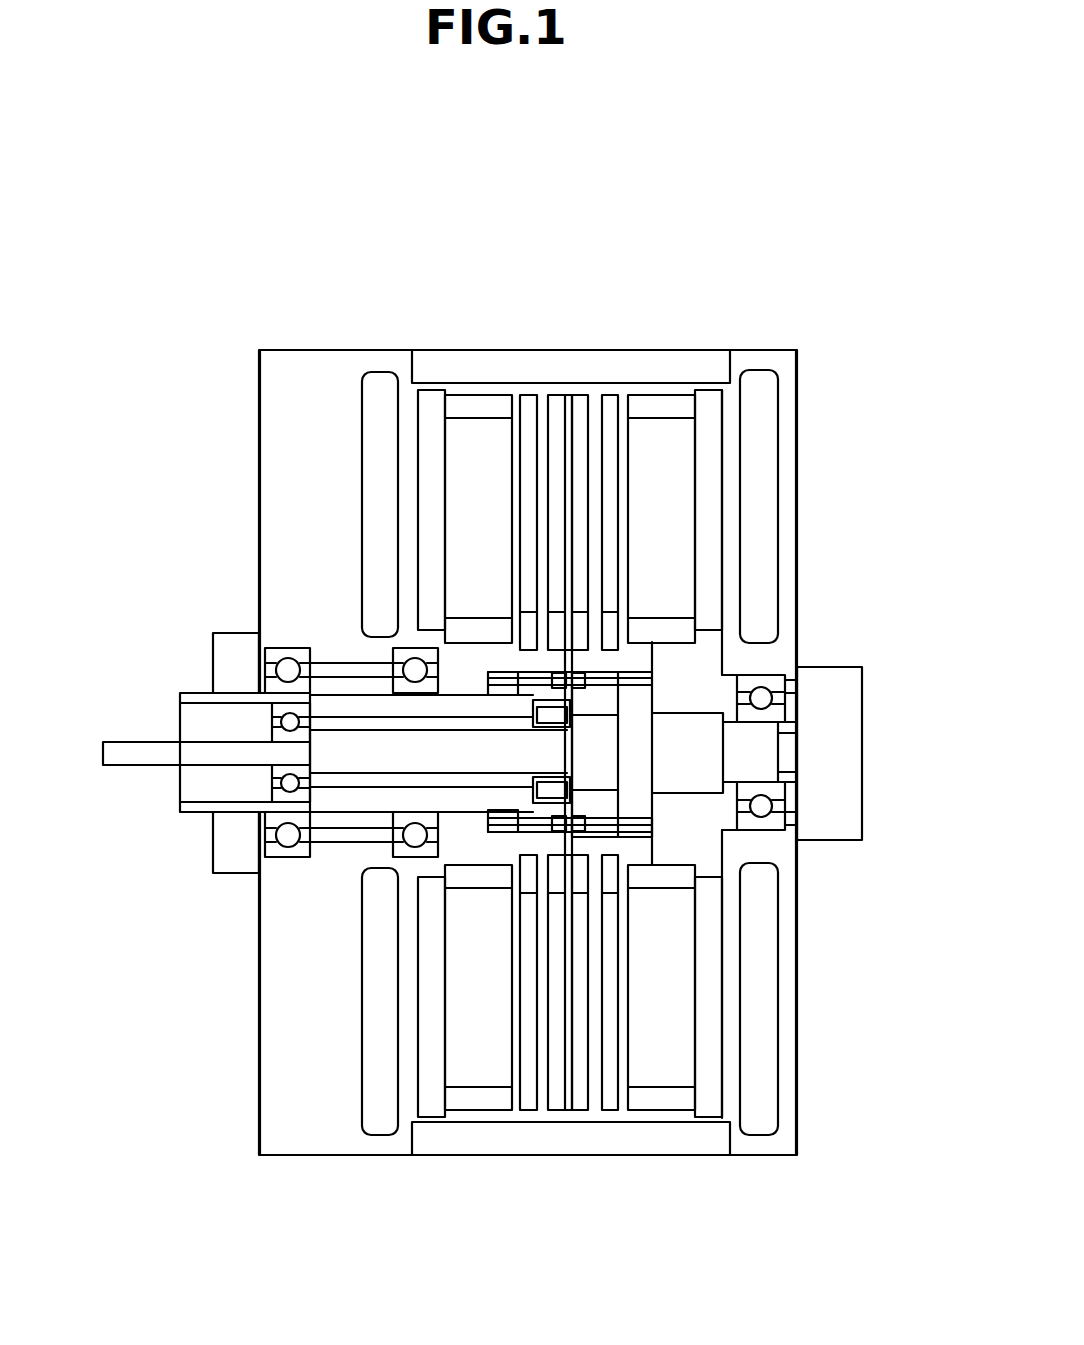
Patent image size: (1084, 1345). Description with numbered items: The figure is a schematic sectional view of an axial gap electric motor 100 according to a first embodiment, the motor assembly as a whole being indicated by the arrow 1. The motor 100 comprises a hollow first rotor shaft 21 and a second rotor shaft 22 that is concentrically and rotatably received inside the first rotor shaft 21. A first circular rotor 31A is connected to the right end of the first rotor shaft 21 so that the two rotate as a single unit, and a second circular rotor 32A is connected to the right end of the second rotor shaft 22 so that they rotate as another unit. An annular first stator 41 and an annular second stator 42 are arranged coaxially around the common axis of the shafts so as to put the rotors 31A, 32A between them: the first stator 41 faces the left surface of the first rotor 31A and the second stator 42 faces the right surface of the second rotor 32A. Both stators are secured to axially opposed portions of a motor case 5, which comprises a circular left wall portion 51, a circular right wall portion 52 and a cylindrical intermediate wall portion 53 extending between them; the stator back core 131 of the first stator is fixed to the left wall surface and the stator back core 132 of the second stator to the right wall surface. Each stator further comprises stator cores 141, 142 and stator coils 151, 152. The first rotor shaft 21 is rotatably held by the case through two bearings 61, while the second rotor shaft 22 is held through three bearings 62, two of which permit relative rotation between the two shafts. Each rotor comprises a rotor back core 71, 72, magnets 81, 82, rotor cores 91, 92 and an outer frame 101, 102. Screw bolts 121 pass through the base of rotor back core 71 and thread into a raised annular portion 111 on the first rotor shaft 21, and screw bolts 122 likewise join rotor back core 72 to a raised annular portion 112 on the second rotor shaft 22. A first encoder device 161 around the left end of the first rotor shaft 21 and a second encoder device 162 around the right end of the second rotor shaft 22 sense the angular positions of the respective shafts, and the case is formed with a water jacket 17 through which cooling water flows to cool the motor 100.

The axial gap electric motor 100 is at (590, 156).
The motor main body 1 is at (630, 336).
The motor case 5 is at (288, 1158).
The circular left wall portion 51 is at (293, 1100).
The circular right wall portion 52 is at (787, 1143).
The cylindrical intermediate wall portion 53 is at (677, 1140).
The water jacket 17 is at (378, 983).
The first rotor shaft 21 is at (187, 698).
The second rotor shaft 22 is at (120, 740).
The first circular rotor 31A is at (545, 390).
The second circular rotor 32A is at (587, 390).
The first stator 41 is at (475, 394).
The second stator 42 is at (667, 390).
The bearings 61 is at (285, 650).
The bearings 62 is at (272, 712).
The rotor back core 71 is at (523, 850).
The rotor back core 72 is at (600, 847).
The magnets 81 is at (530, 438).
The magnets 82 is at (612, 557).
The rotor cores 91 is at (550, 987).
The rotor cores 92 is at (610, 1020).
The outer frame 101 is at (552, 1112).
The outer frame 102 is at (607, 1112).
The raised annular portion 111 is at (500, 672).
The raised annular portion 112 is at (637, 733).
The screw bolts 121 is at (538, 680).
The screw bolts 122 is at (627, 678).
The stator back core 131 is at (465, 433).
The stator back core 132 is at (710, 507).
The stator cores 141 is at (433, 408).
The stator cores 142 is at (668, 463).
The stator coils 151 is at (497, 407).
The stator coils 152 is at (680, 407).
The first encoder device 161 is at (225, 858).
The second encoder device 162 is at (833, 795).